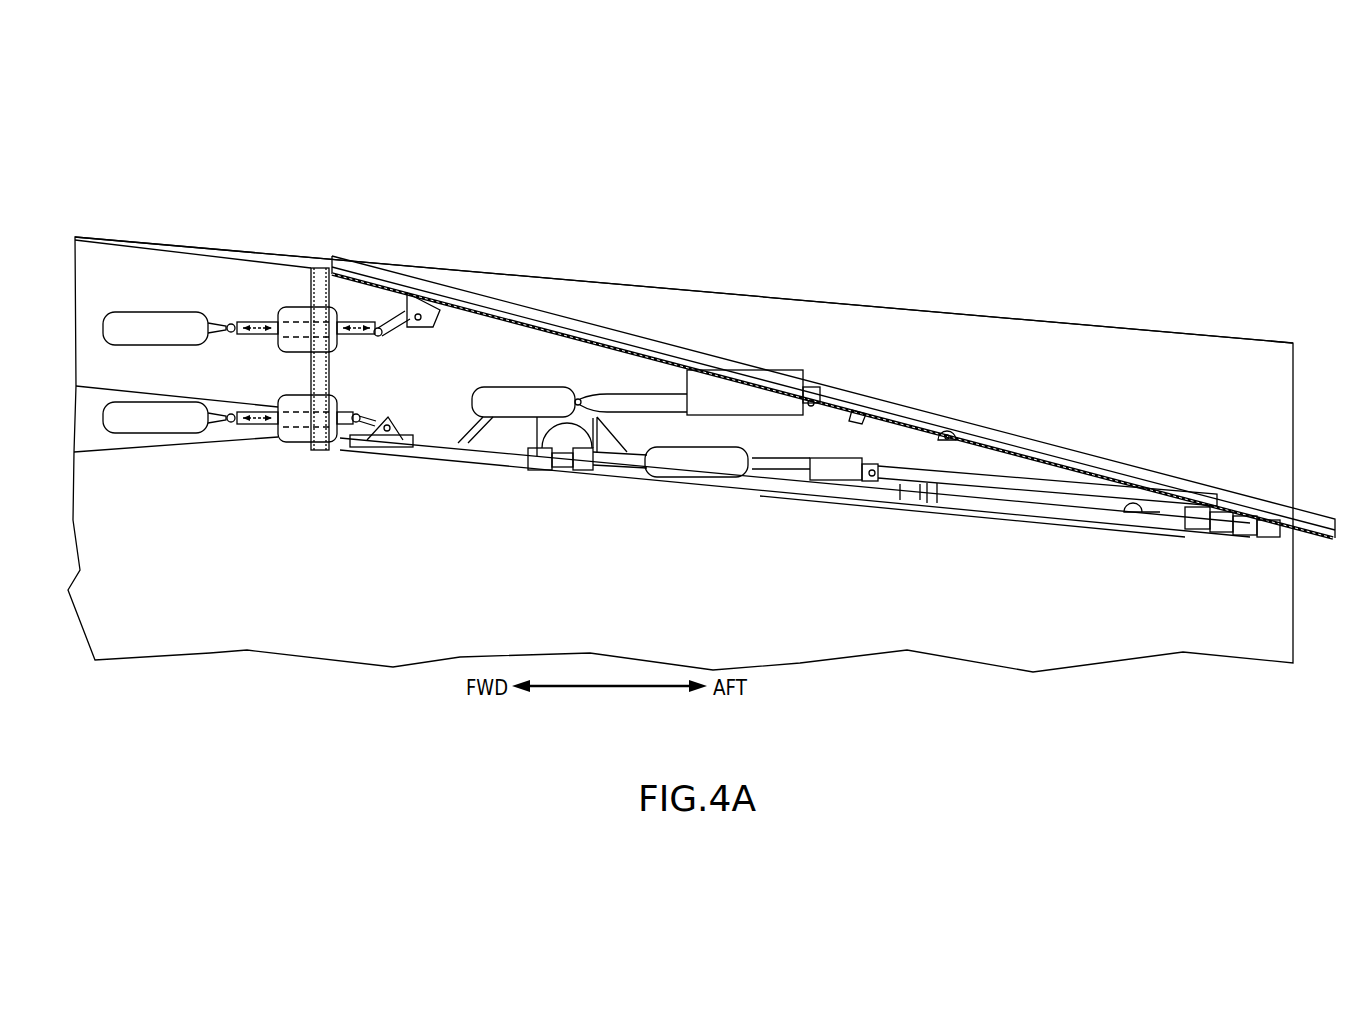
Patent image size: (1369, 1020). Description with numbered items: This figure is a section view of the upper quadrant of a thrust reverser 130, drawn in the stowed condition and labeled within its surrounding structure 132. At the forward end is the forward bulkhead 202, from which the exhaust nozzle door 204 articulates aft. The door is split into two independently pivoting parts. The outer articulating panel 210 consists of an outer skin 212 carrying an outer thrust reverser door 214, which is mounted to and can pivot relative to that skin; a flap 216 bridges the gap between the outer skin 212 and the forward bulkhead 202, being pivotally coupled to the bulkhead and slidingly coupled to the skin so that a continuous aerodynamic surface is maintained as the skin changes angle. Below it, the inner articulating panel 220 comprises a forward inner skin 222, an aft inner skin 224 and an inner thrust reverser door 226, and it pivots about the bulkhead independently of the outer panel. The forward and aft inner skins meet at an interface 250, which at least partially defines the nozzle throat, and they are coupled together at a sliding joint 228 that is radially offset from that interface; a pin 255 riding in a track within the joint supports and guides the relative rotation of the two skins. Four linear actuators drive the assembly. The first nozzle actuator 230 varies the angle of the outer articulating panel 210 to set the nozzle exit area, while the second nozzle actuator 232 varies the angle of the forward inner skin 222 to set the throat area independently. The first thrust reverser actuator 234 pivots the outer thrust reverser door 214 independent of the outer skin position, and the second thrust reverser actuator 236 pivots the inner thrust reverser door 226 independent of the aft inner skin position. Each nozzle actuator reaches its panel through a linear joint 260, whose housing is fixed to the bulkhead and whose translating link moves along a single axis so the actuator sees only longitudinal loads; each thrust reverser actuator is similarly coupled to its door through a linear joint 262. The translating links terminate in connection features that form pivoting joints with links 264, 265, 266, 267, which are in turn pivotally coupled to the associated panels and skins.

The thrust reverser 130 is at (603, 160).
The wing 132 is at (680, 454).
The forward bulkhead 202 is at (323, 278).
The exhaust nozzle door 204 is at (879, 330).
The outer articulating panel 210 is at (746, 328).
The outer skin 212 is at (635, 338).
The outer thrust reverser door 214 is at (1012, 442).
The flap 216 is at (388, 263).
The inner articulating panel 220 is at (804, 522).
The forward inner skin 222 is at (410, 457).
The aft inner skin 224 is at (642, 472).
The inner thrust reverser door 226 is at (1026, 508).
The sliding joint 228 is at (588, 445).
The first nozzle actuator 230 is at (180, 298).
The second nozzle actuator 232 is at (182, 450).
The first thrust reverser actuator 234 is at (526, 372).
The second thrust reverser actuator 236 is at (717, 492).
The interface 250 is at (564, 496).
The pin 255 is at (598, 417).
The linear joint 260 is at (263, 286).
The linear joint 262 is at (707, 370).
The link 264 is at (401, 332).
The link 265 is at (368, 420).
The link 266 is at (859, 420).
The link 267 is at (934, 480).